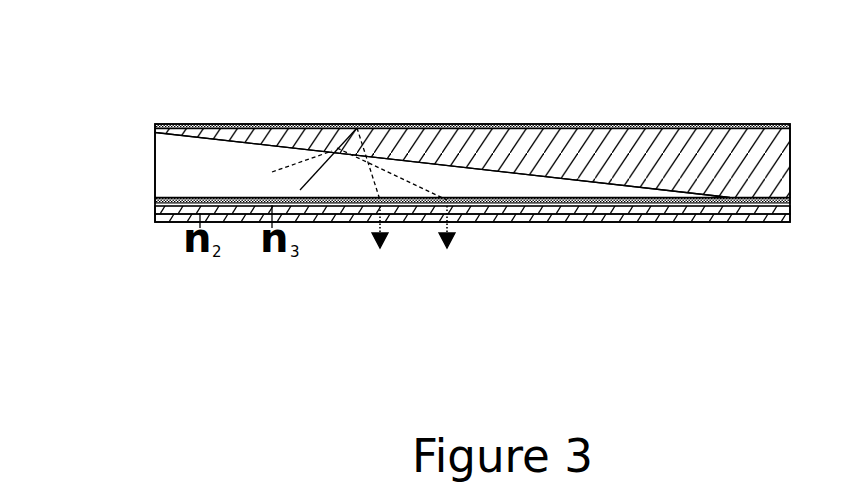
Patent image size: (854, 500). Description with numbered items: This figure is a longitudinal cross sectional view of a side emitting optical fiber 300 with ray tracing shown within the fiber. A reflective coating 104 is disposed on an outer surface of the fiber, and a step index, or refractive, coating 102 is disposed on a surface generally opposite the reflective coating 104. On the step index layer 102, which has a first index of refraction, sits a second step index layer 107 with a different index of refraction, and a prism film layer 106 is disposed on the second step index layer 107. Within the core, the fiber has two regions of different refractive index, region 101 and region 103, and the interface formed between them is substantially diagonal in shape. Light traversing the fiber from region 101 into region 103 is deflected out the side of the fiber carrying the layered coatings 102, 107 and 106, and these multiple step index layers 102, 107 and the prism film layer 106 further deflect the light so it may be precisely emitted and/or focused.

The region 101 is at (163, 165).
The step index layer 102 is at (154, 218).
The region 103 is at (625, 168).
The reflective coating 104 is at (192, 128).
The prism film layer 106 is at (773, 212).
The second step index layer 107 is at (594, 205).
The optical fiber 300 is at (472, 158).